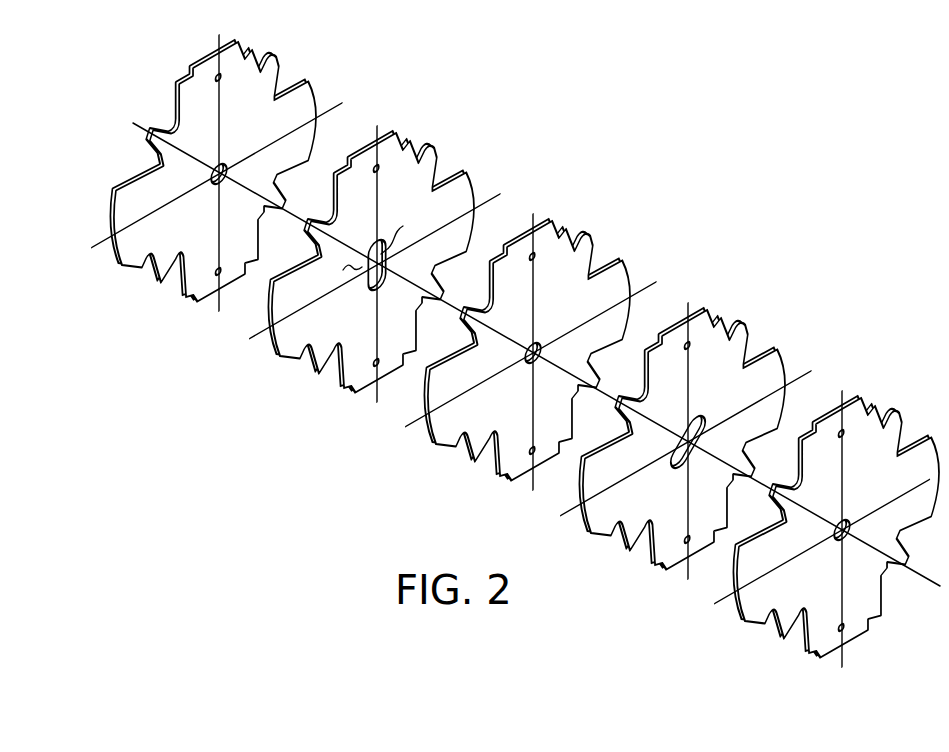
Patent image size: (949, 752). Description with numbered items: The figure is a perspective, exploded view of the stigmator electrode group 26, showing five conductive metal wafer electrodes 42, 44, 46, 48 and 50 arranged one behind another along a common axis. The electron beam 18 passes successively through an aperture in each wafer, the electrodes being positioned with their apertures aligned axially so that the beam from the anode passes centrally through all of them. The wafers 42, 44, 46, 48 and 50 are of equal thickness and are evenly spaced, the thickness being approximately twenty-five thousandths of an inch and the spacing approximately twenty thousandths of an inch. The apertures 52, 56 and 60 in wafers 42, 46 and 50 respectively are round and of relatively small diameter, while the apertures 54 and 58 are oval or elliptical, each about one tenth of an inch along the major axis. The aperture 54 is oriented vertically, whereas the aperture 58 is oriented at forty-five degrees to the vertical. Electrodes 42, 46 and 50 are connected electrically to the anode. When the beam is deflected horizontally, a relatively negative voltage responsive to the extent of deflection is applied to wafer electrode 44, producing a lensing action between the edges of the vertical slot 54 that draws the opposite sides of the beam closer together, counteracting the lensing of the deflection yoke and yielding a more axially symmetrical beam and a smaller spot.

The electron beam 18 is at (925, 582).
The electrode group 26 is at (516, 370).
The wafer electrode 42 is at (217, 192).
The wafer electrode 44 is at (375, 265).
The wafer electrode 46 is at (531, 353).
The wafer electrode 48 is at (686, 442).
The wafer electrode 50 is at (827, 538).
The aperture 52 is at (227, 177).
The aperture 54 is at (389, 262).
The aperture 56 is at (541, 354).
The aperture 58 is at (697, 443).
The aperture 60 is at (851, 532).